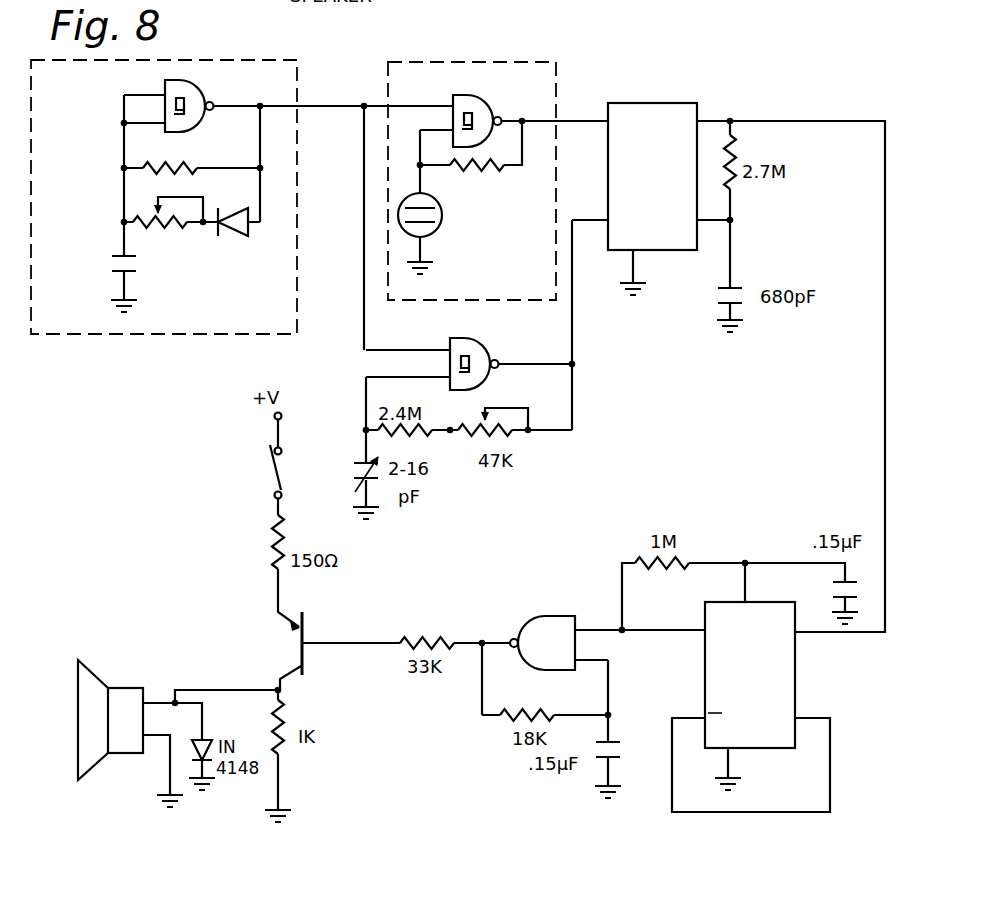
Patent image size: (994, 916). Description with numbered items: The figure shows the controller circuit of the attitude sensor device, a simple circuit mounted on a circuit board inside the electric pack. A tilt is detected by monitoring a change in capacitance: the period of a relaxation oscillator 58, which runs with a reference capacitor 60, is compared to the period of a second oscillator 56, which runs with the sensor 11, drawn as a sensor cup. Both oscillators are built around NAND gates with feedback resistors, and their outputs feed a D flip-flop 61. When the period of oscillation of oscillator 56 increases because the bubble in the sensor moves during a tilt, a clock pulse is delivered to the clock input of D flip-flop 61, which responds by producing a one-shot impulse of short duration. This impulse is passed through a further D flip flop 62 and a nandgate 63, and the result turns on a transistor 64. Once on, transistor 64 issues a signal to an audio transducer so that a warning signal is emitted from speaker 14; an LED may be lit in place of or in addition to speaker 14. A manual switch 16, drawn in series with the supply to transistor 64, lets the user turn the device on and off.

The relaxation oscillator 58 is at (98, 101).
The reference capacitor 60 is at (104, 281).
The oscillator 56 is at (540, 97).
The sensor 11 is at (439, 241).
The D flip-flop 61 is at (664, 106).
The manual switch 16 is at (265, 468).
The transistor 64 is at (309, 631).
The nandgate 63 is at (566, 590).
The D flip flop 62 is at (790, 680).
The speaker 14 is at (125, 753).